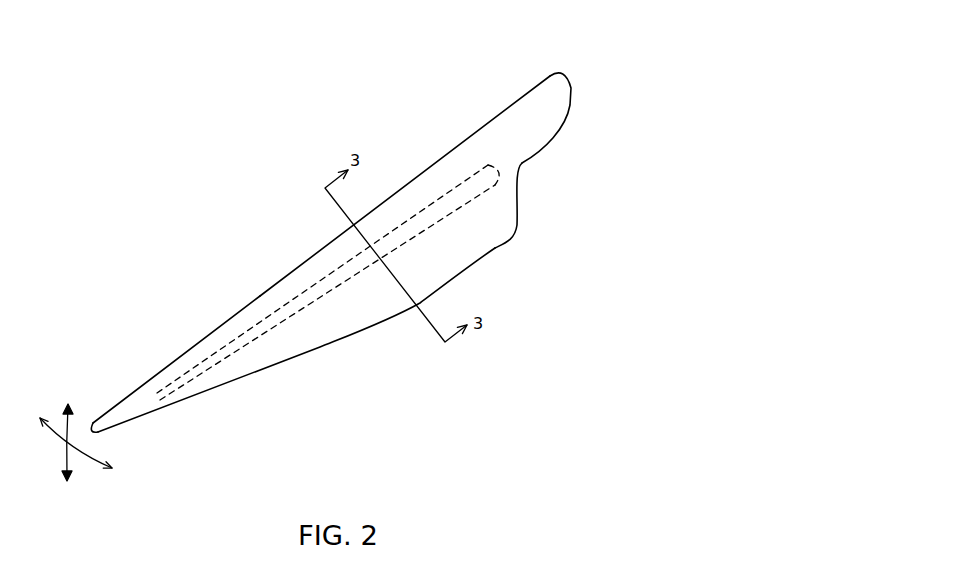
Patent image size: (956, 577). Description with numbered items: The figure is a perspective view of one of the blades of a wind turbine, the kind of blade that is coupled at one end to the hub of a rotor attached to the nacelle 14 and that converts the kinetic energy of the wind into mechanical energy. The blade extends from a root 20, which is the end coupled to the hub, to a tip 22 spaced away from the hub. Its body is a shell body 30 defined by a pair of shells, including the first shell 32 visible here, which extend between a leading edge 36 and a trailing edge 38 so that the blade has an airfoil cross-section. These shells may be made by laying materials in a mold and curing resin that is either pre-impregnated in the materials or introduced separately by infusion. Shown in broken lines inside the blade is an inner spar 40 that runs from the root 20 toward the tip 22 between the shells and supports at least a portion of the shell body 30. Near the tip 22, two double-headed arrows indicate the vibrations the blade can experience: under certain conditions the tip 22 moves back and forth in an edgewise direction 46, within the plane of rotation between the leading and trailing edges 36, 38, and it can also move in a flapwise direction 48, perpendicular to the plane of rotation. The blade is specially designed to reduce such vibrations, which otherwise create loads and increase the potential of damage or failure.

The nacelle 14 is at (197, 190).
The root 20 is at (522, 95).
The tip 22 is at (96, 436).
The shell body 30 is at (193, 345).
The first shell 32 is at (485, 226).
The leading edge 36 is at (268, 290).
The trailing edge 38 is at (300, 355).
The inner spar 40 is at (457, 187).
The edgewise direction 46 is at (89, 450).
The flapwise direction 48 is at (68, 431).